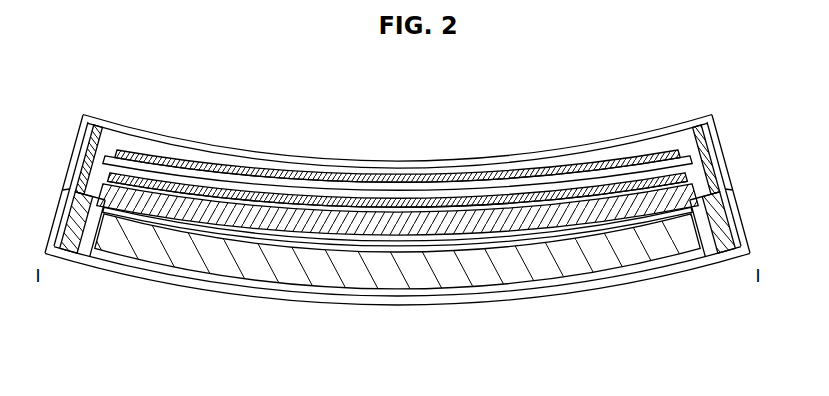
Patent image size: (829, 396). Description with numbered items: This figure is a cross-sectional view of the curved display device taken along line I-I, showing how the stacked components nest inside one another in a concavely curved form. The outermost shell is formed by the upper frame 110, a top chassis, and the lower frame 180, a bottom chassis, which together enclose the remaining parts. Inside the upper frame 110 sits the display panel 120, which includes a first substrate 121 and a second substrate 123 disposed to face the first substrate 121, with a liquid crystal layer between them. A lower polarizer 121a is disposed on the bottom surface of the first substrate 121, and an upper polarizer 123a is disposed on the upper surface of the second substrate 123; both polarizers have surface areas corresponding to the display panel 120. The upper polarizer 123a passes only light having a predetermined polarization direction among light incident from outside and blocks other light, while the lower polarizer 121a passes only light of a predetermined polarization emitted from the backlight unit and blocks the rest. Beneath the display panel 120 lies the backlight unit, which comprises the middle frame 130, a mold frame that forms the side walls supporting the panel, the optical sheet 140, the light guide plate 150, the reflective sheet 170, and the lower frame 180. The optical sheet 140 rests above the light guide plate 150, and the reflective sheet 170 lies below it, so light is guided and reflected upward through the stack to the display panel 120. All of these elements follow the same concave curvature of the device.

The upper frame 110 is at (291, 156).
The display panel 120 is at (513, 104).
The first substrate 121 is at (460, 197).
The lower polarizer 121a is at (508, 200).
The second substrate 123 is at (410, 187).
The upper polarizer 123a is at (358, 175).
The middle frame 130 is at (704, 161).
The optical sheet 140 is at (689, 206).
The light guide plate 150 is at (688, 235).
The reflective sheet 170 is at (466, 291).
The lower frame 180 is at (380, 305).